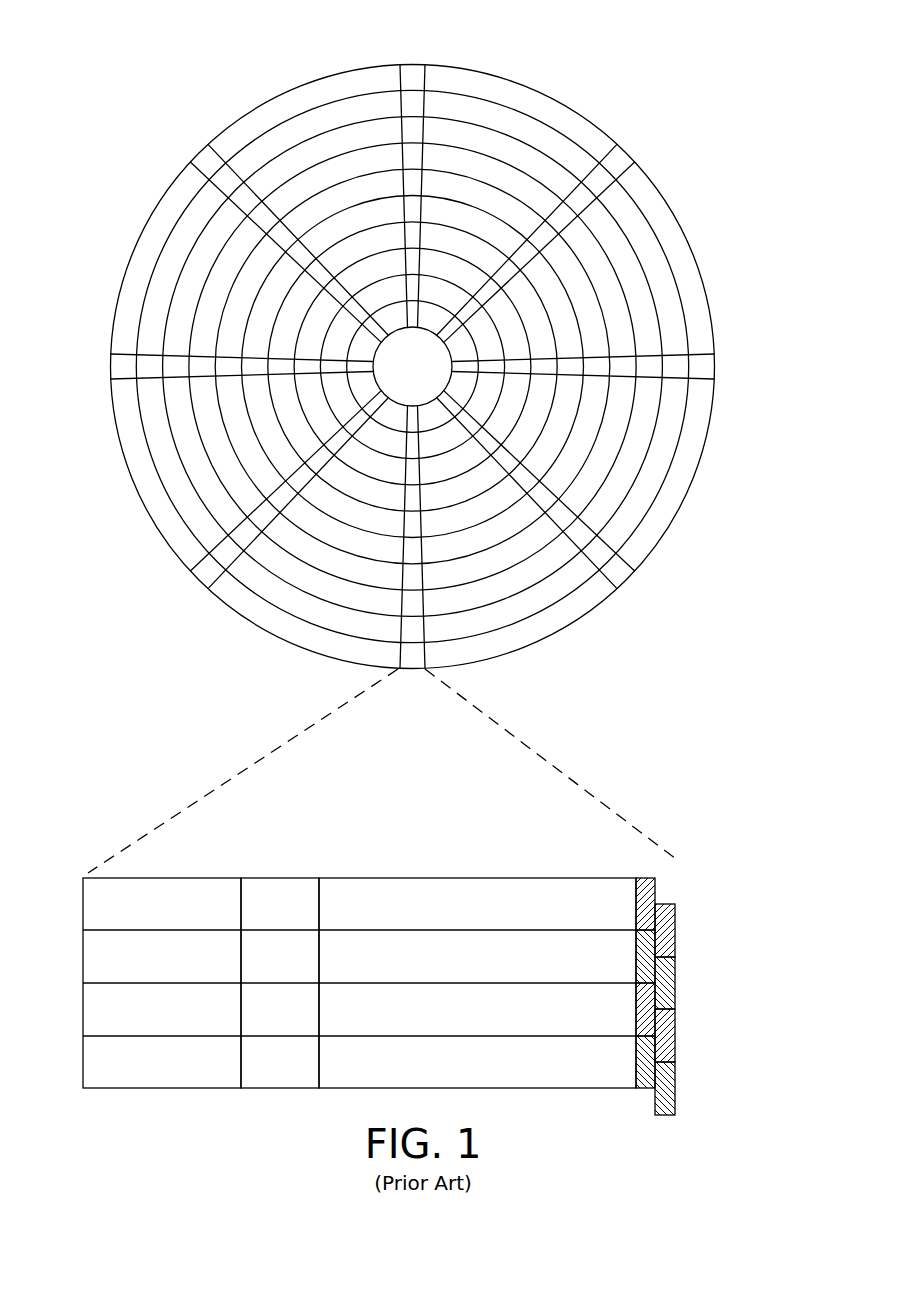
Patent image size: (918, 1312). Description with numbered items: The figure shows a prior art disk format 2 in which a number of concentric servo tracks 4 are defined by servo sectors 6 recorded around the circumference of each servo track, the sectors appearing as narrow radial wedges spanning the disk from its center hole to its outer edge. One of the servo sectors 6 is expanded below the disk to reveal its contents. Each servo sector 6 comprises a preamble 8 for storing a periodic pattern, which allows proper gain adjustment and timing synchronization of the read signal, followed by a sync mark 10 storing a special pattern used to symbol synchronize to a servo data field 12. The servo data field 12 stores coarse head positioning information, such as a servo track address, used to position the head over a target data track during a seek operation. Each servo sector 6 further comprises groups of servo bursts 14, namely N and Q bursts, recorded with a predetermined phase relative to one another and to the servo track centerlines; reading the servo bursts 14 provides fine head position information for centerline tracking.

The disk format 2 is at (186, 67).
The servo track 4 is at (515, 125).
The servo sector 6 is at (278, 742).
The preamble 8 is at (170, 877).
The sync mark 10 is at (283, 877).
The servo data field 12 is at (465, 877).
The servo bursts 14 is at (670, 878).